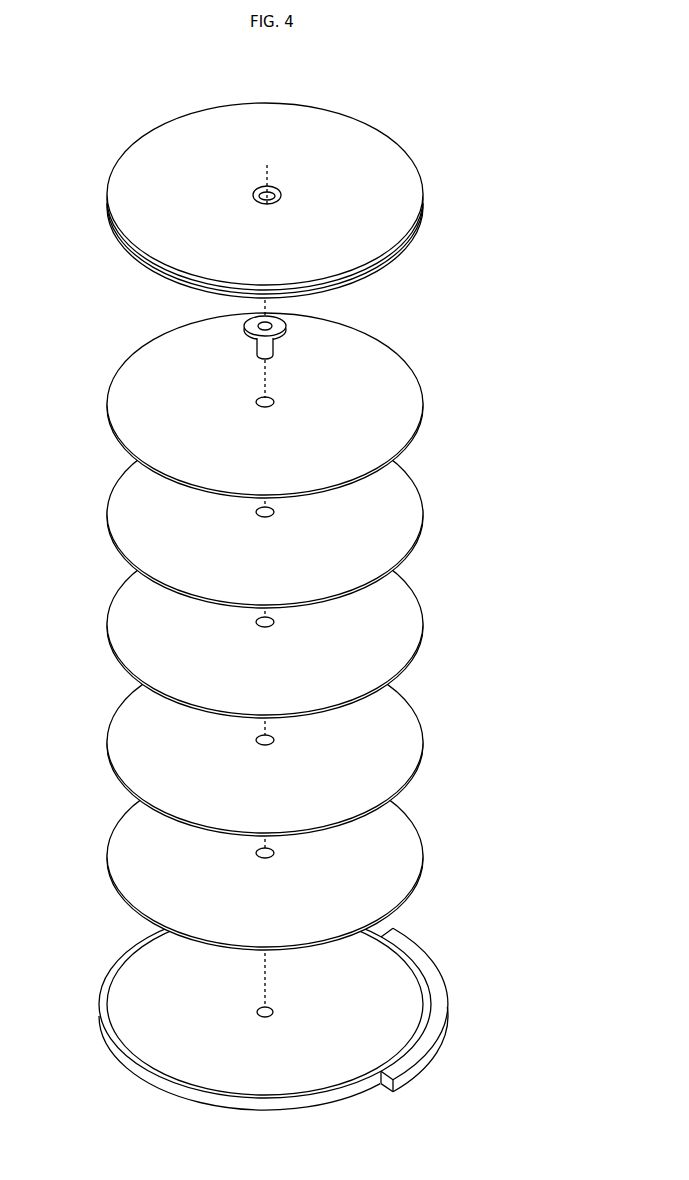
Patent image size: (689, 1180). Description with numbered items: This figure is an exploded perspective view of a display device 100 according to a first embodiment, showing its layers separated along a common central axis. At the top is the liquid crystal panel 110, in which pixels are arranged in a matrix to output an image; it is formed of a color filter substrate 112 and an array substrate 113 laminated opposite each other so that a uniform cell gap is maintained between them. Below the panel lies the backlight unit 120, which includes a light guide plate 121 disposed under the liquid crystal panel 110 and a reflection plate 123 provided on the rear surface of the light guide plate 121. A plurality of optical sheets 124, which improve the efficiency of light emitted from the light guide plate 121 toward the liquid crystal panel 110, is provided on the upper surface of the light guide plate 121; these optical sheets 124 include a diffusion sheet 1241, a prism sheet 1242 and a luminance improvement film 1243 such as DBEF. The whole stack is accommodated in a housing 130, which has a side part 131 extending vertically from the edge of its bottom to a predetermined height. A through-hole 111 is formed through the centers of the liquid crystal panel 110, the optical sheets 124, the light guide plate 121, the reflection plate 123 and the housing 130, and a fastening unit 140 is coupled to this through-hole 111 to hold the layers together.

The display device 100 is at (56, 109).
The liquid crystal panel 110 is at (329, 200).
The through-hole 111 is at (254, 197).
The color filter substrate 112 is at (500, 245).
The array substrate 113 is at (418, 234).
The backlight unit 120 is at (430, 998).
The light guide plate 121 is at (412, 733).
The reflection plate 123 is at (410, 848).
The optical sheets 124 is at (336, 515).
The diffusion sheet 1241 is at (410, 617).
The prism sheet 1242 is at (410, 503).
The luminance improvement film 1243 is at (309, 405).
The housing 130 is at (140, 1023).
The side part 131 is at (143, 1073).
The fastening unit 140 is at (257, 346).